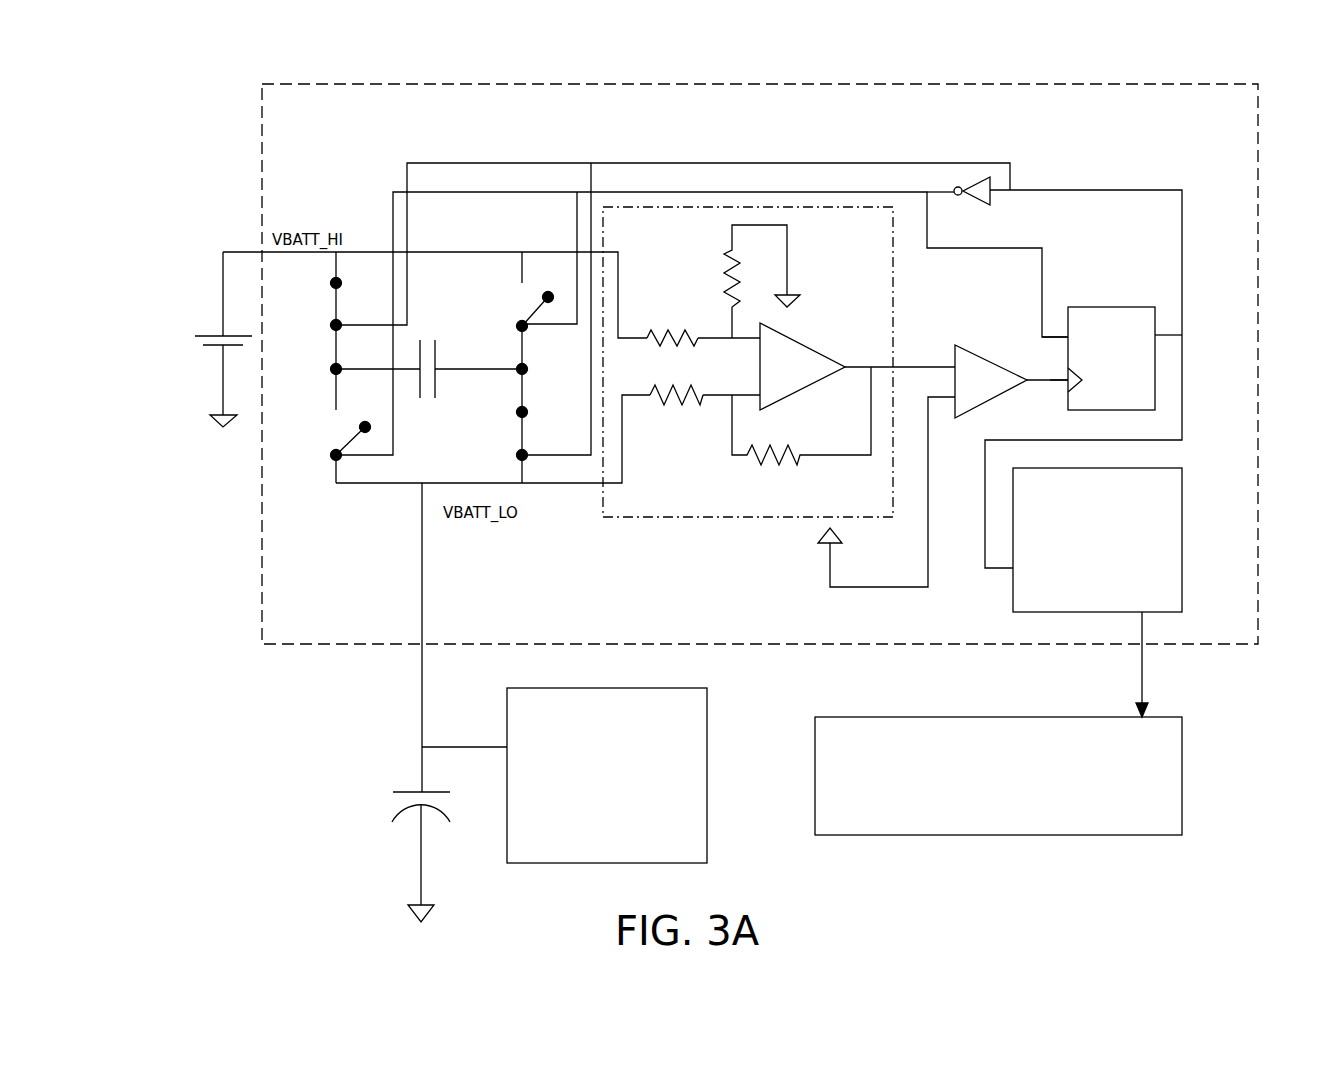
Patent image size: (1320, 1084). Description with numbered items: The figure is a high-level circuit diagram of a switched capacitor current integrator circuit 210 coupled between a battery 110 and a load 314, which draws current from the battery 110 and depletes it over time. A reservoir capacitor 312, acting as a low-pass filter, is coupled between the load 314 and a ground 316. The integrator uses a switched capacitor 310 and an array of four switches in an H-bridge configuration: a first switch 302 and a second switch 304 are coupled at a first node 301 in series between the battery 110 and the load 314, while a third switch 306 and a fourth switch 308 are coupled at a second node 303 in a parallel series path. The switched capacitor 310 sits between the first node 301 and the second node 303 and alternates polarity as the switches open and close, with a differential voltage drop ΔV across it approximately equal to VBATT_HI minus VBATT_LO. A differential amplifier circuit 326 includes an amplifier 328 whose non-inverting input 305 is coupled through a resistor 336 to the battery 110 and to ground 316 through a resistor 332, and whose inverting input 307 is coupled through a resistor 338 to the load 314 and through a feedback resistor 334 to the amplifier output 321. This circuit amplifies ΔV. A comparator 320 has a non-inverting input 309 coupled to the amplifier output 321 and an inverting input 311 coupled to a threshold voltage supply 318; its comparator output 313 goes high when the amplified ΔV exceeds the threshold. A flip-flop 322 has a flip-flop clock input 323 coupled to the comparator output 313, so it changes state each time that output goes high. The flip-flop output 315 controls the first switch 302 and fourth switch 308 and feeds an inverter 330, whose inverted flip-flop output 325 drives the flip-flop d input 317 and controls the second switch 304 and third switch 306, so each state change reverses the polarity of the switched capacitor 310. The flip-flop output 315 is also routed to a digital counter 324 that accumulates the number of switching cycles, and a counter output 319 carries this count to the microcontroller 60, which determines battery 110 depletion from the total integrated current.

The switched capacitor current integrator circuit 210 is at (258, 111).
The battery 110 is at (195, 349).
The ground 316 is at (222, 428).
The first switch 302 is at (334, 304).
The first node 301 is at (334, 369).
The second switch 304 is at (334, 424).
The third switch 306 is at (525, 302).
The second node 303 is at (530, 373).
The fourth switch 308 is at (526, 440).
The switched capacitor 310 is at (437, 373).
The resistor 332 is at (720, 275).
The resistor 336 is at (666, 325).
The non-inverting input 305 is at (745, 334).
The inverting input 307 is at (740, 397).
The amplifier 328 is at (820, 380).
The amplifier output 321 is at (855, 365).
The non-inverting input 309 is at (918, 367).
The resistor 338 is at (673, 408).
The feedback resistor 334 is at (775, 463).
The differential amplifier circuit 326 is at (700, 520).
The comparator 320 is at (966, 345).
The comparator output 313 is at (1038, 381).
The inverting input 311 is at (942, 400).
The threshold voltage supply 318 is at (820, 542).
The flip-flop 322 is at (1122, 307).
The flip-flop d input 317 is at (1050, 335).
The flip-flop clock input 323 is at (1067, 384).
The flip-flop output 315 is at (1172, 335).
The inverter 330 is at (980, 205).
The inverted flip-flop output 325 is at (920, 192).
The digital counter 324 is at (1173, 463).
The counter output 319 is at (1148, 626).
The microcontroller 60 is at (815, 730).
The load 314 is at (505, 700).
The reservoir capacitor 312 is at (405, 785).